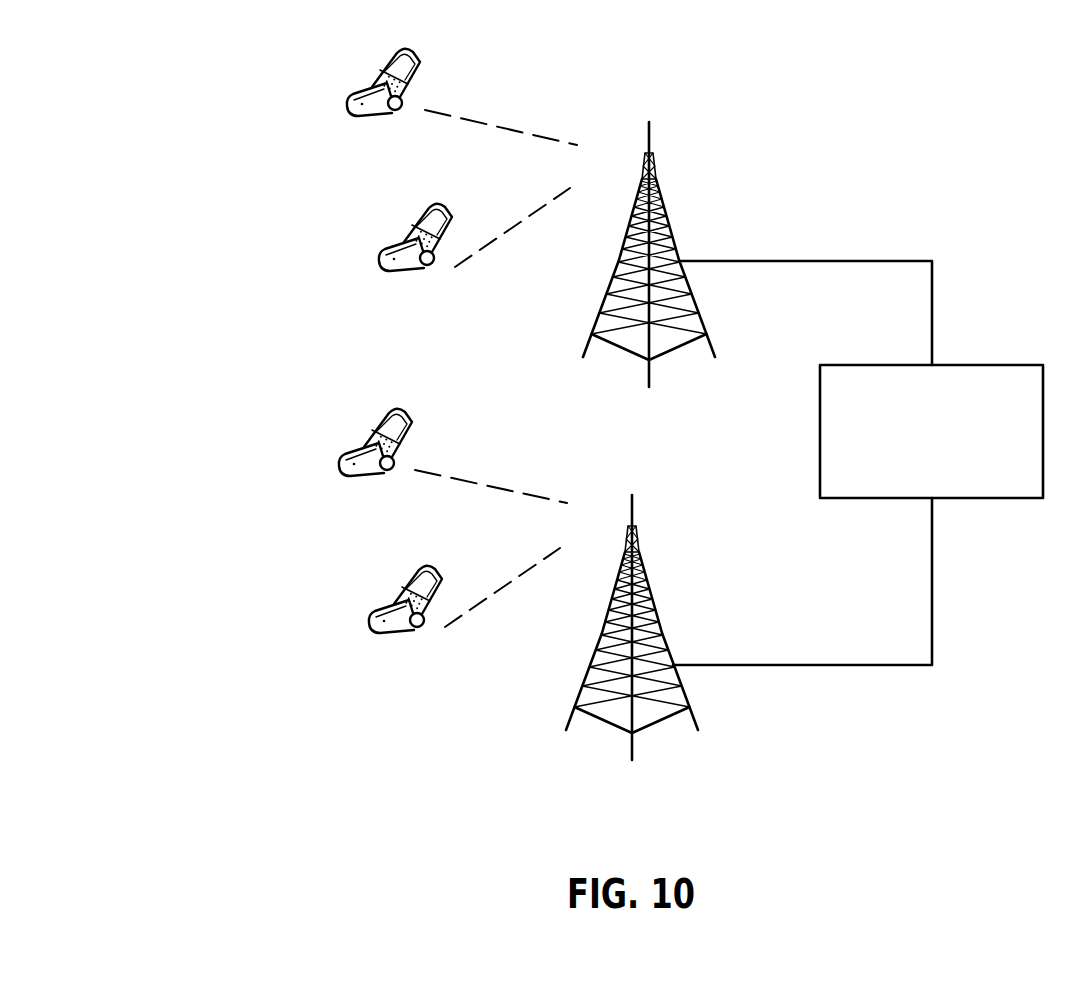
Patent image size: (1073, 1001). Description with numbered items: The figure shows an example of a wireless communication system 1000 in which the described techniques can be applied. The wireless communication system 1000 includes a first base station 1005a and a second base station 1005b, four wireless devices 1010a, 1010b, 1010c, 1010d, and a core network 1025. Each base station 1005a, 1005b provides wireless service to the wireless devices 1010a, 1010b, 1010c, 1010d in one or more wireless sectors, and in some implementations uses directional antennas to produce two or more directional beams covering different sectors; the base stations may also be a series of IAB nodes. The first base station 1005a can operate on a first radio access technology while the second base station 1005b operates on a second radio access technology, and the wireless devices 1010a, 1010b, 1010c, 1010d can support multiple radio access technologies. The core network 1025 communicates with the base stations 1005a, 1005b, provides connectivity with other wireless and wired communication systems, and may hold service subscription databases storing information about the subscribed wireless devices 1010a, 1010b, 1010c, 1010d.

The wireless communication system 1000 is at (157, 132).
The wireless device 1010a is at (462, 85).
The wireless device 1010b is at (474, 215).
The wireless device 1010c is at (453, 439).
The wireless device 1010d is at (464, 580).
The first base station 1005a is at (757, 260).
The second base station 1005b is at (749, 639).
The core network 1025 is at (931, 410).